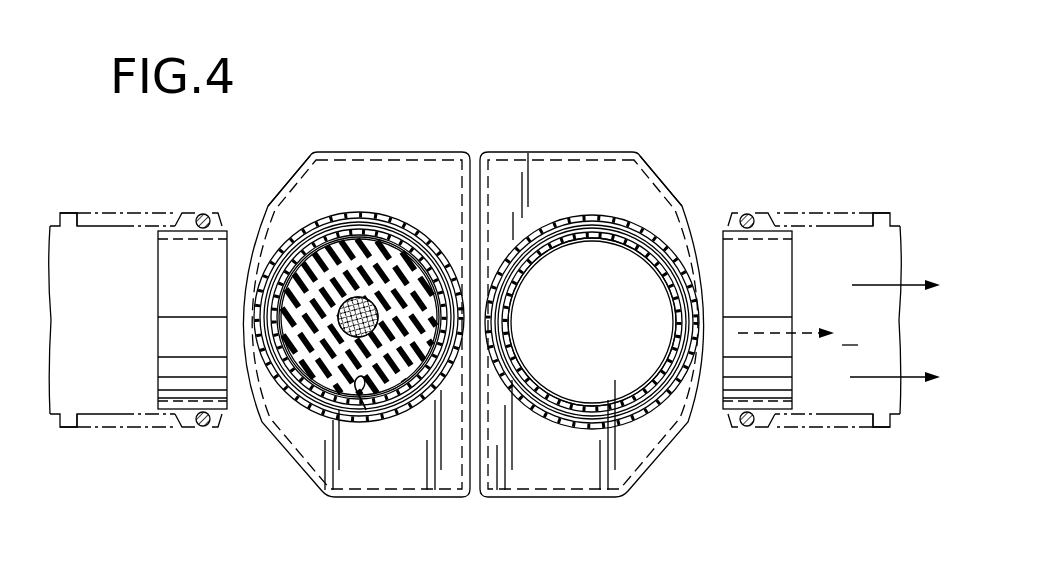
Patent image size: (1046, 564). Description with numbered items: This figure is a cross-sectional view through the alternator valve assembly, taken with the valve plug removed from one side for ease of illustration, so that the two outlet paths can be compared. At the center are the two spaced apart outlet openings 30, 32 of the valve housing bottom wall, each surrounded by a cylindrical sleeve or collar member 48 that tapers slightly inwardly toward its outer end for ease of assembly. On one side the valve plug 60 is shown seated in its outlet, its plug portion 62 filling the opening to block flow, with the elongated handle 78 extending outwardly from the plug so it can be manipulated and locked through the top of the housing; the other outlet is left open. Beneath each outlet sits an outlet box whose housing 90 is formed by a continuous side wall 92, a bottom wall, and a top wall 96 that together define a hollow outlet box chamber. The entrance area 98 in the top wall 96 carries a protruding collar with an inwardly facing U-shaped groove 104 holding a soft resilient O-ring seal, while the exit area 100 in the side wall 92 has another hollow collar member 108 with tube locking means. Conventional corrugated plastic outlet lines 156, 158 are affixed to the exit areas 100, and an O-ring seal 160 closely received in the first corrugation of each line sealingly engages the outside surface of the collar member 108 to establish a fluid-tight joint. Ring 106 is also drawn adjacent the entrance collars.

The outlet opening 30 is at (581, 334).
The outlet opening 32 is at (365, 402).
The cylindrical sleeve or collar member 48 is at (291, 268).
The valve plug 60 is at (310, 381).
The plug portion 62 is at (396, 285).
The handle 78 is at (367, 327).
The outlet box housing 90 is at (364, 502).
The side wall 92 is at (375, 152).
The top wall 96 is at (310, 153).
The entrance area 98 is at (282, 318).
The exit area 100 is at (152, 330).
The U-shaped groove 104 is at (355, 213).
The intermediate ring 106 is at (410, 238).
The sleeve or collar member 108 is at (250, 226).
The outlet line 156 is at (795, 222).
The outlet line 158 is at (110, 222).
The O-ring seal 160 is at (203, 214).